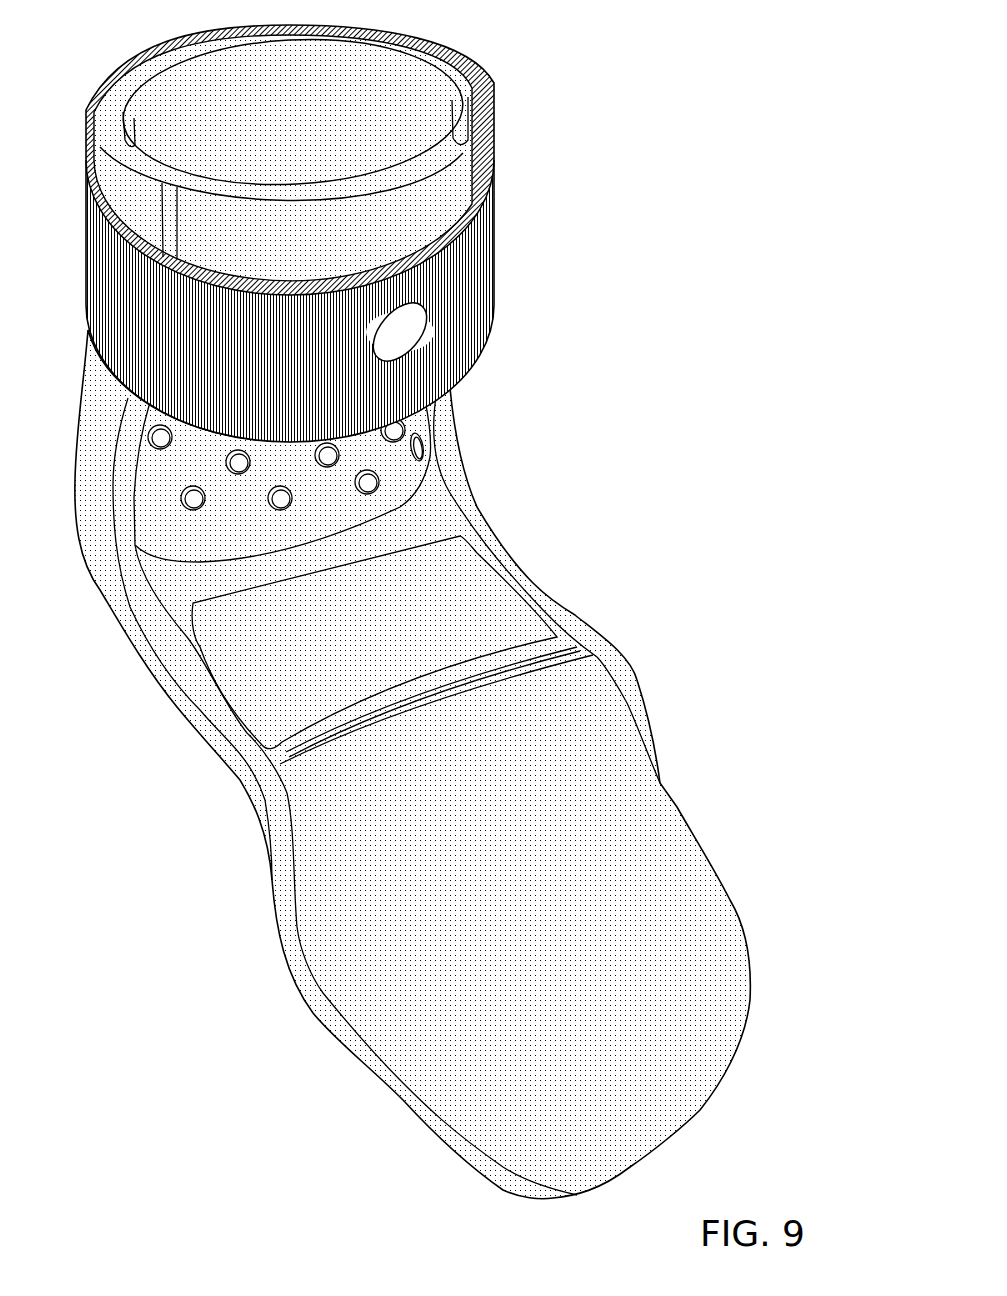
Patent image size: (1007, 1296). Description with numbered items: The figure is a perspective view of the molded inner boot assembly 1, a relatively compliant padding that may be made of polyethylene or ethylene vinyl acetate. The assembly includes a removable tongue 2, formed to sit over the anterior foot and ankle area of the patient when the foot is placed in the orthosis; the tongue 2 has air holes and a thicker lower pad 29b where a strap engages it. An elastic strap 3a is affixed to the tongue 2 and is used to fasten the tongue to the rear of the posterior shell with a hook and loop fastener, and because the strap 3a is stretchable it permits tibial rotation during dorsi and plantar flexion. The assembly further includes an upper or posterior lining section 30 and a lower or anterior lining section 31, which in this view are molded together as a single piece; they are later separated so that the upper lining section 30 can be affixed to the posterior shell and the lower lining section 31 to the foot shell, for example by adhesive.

The molded inner boot assembly 1 is at (94, 200).
The removable tongue 2 is at (422, 507).
The elastic strap 3a is at (468, 315).
The lower pad 29b is at (483, 567).
The upper lining section 30 is at (350, 90).
The lower lining section 31 is at (503, 777).